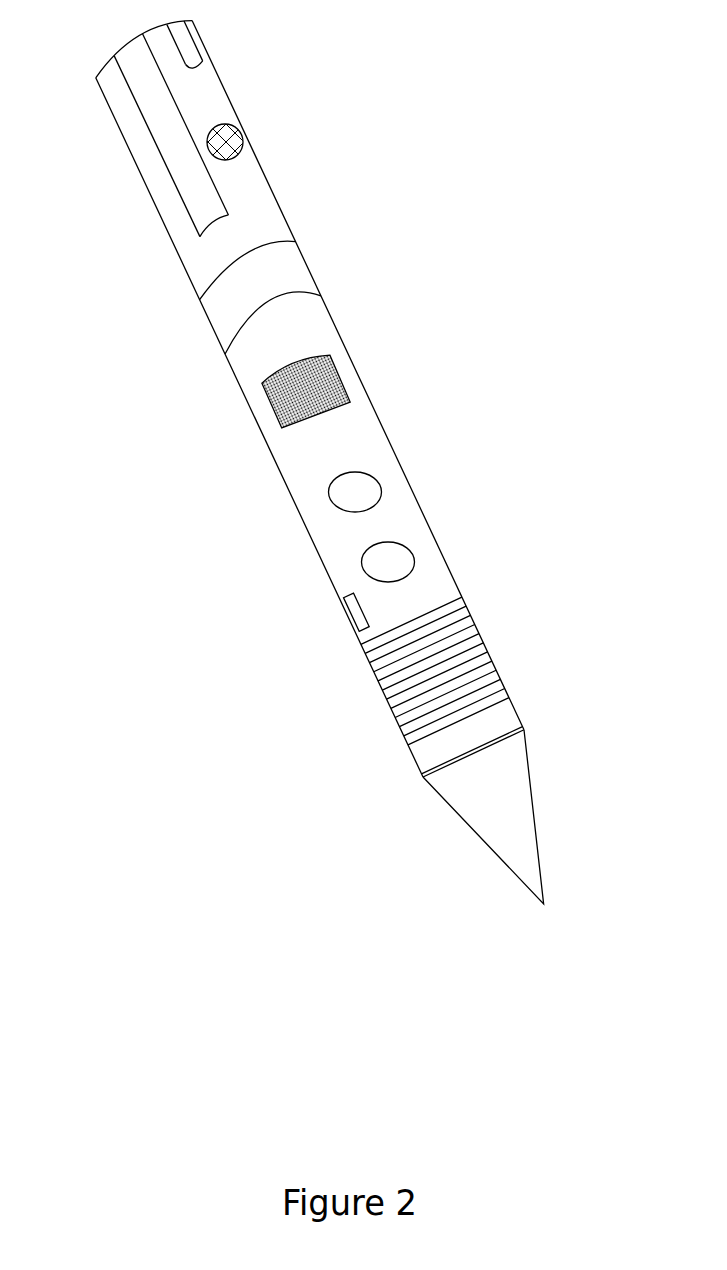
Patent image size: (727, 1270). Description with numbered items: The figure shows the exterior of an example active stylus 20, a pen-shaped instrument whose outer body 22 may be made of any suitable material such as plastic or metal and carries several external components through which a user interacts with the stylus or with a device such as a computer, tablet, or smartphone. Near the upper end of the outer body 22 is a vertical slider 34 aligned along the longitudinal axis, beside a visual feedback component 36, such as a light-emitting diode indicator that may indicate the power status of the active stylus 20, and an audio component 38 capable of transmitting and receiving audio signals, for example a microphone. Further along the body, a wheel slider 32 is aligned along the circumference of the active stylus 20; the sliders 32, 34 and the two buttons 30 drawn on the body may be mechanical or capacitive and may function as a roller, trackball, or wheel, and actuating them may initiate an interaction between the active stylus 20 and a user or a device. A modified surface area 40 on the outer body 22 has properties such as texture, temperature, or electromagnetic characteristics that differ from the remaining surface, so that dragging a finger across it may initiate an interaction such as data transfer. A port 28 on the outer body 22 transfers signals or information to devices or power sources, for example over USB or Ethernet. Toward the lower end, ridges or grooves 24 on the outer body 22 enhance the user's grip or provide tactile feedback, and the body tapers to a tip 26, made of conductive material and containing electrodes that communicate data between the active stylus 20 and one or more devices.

The active stylus 20 is at (344, 469).
The outer body 22 is at (416, 438).
The ridges or grooves 24 is at (486, 642).
The tip 26 is at (555, 807).
The port 28 is at (348, 617).
The buttons 30 is at (357, 558).
The wheel slider 32 is at (209, 308).
The vertical slider 34 is at (138, 118).
The visual feedback component 36 is at (178, 40).
The audio component 38 is at (235, 126).
The modified surface area 40 is at (328, 378).